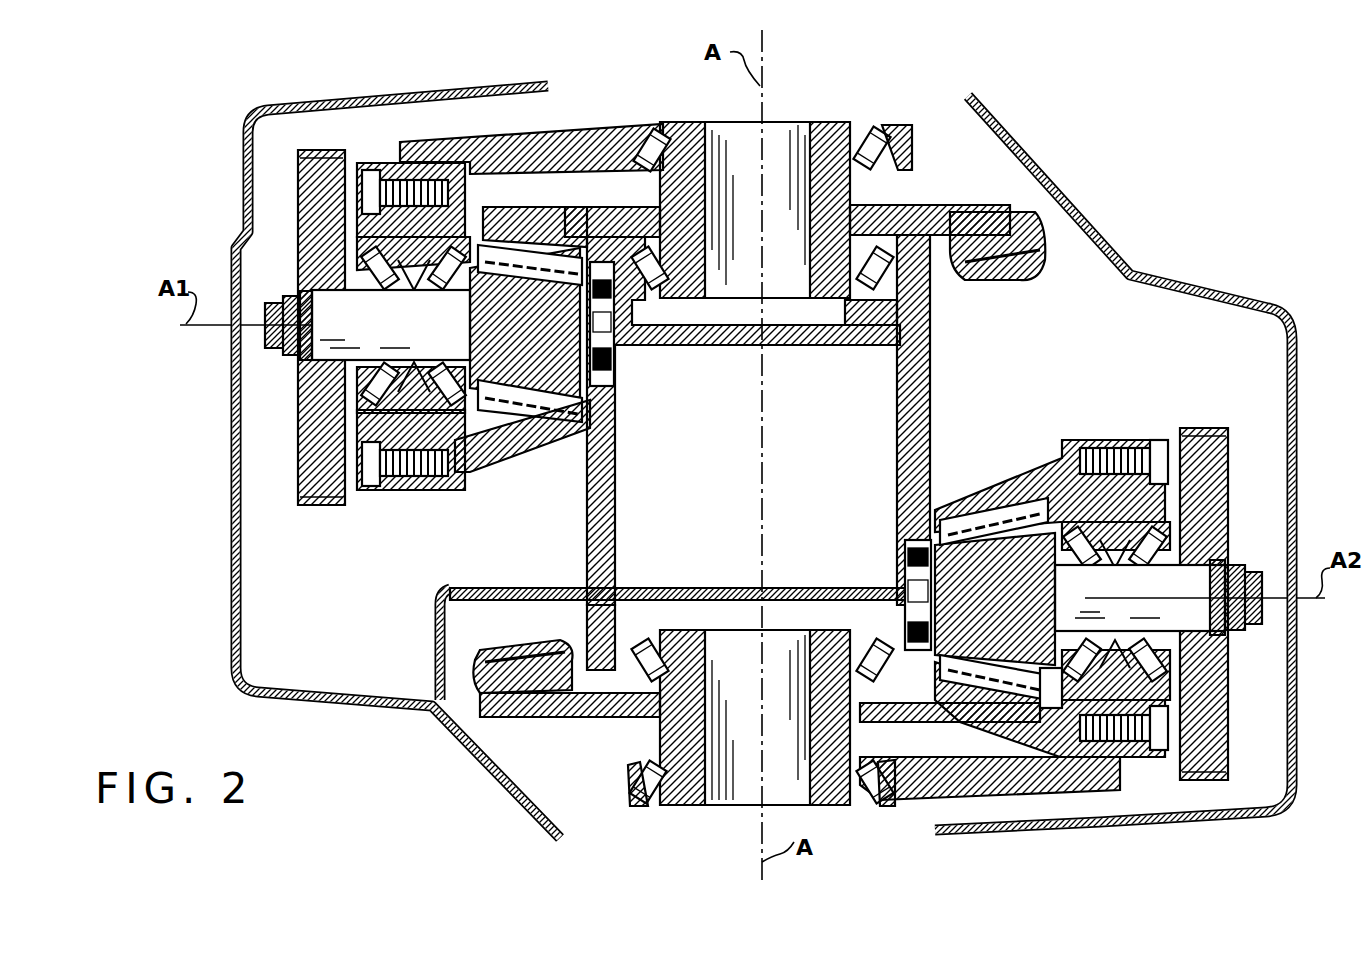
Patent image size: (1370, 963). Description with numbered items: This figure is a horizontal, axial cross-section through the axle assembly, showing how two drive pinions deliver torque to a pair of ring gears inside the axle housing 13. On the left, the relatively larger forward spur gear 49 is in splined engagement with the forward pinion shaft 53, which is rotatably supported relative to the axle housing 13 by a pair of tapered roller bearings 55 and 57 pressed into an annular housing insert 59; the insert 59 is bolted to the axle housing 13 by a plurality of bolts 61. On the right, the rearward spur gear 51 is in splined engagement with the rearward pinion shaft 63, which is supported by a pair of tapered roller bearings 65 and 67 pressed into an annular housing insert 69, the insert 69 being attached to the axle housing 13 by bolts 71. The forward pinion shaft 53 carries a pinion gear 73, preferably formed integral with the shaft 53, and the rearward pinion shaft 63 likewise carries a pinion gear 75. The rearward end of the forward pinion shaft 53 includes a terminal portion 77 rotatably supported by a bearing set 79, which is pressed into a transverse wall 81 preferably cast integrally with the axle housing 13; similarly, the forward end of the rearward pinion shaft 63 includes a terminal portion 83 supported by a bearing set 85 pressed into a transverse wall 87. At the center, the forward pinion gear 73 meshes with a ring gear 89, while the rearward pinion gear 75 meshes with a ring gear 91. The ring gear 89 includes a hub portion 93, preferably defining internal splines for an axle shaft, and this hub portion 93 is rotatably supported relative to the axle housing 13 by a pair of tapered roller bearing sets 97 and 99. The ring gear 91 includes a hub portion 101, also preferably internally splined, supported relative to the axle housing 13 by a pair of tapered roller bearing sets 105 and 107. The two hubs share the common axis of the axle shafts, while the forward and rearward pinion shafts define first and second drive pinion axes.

The axle housing 13 is at (300, 112).
The forward spur gear 49 is at (328, 480).
The rearward spur gear 51 is at (1208, 432).
The forward pinion shaft 53 is at (367, 325).
The tapered roller bearing 55 is at (360, 394).
The tapered roller bearing 57 is at (490, 238).
The annular housing insert 59 is at (454, 446).
The bolts 61 is at (368, 486).
The rearward pinion shaft 63 is at (1158, 597).
The tapered roller bearing 65 is at (1126, 532).
The tapered roller bearing 67 is at (1056, 692).
The annular housing insert 69 is at (1150, 690).
The bolts 71 is at (1150, 754).
The forward pinion gear 73 is at (540, 406).
The rearward pinion gear 75 is at (974, 522).
The terminal portion 77 is at (580, 318).
The bearing set 79 is at (616, 410).
The transverse wall 81 is at (616, 492).
The terminal portion 83 is at (935, 594).
The bearing set 85 is at (910, 544).
The transverse wall 87 is at (904, 418).
The ring gear 89 is at (600, 211).
The ring gear 91 is at (914, 705).
The hub portion 93 is at (812, 236).
The tapered roller bearing set 97 is at (668, 266).
The tapered roller bearing set 99 is at (900, 146).
The hub portion 101 is at (810, 727).
The tapered roller bearing set 105 is at (637, 654).
The tapered roller bearing set 107 is at (630, 785).